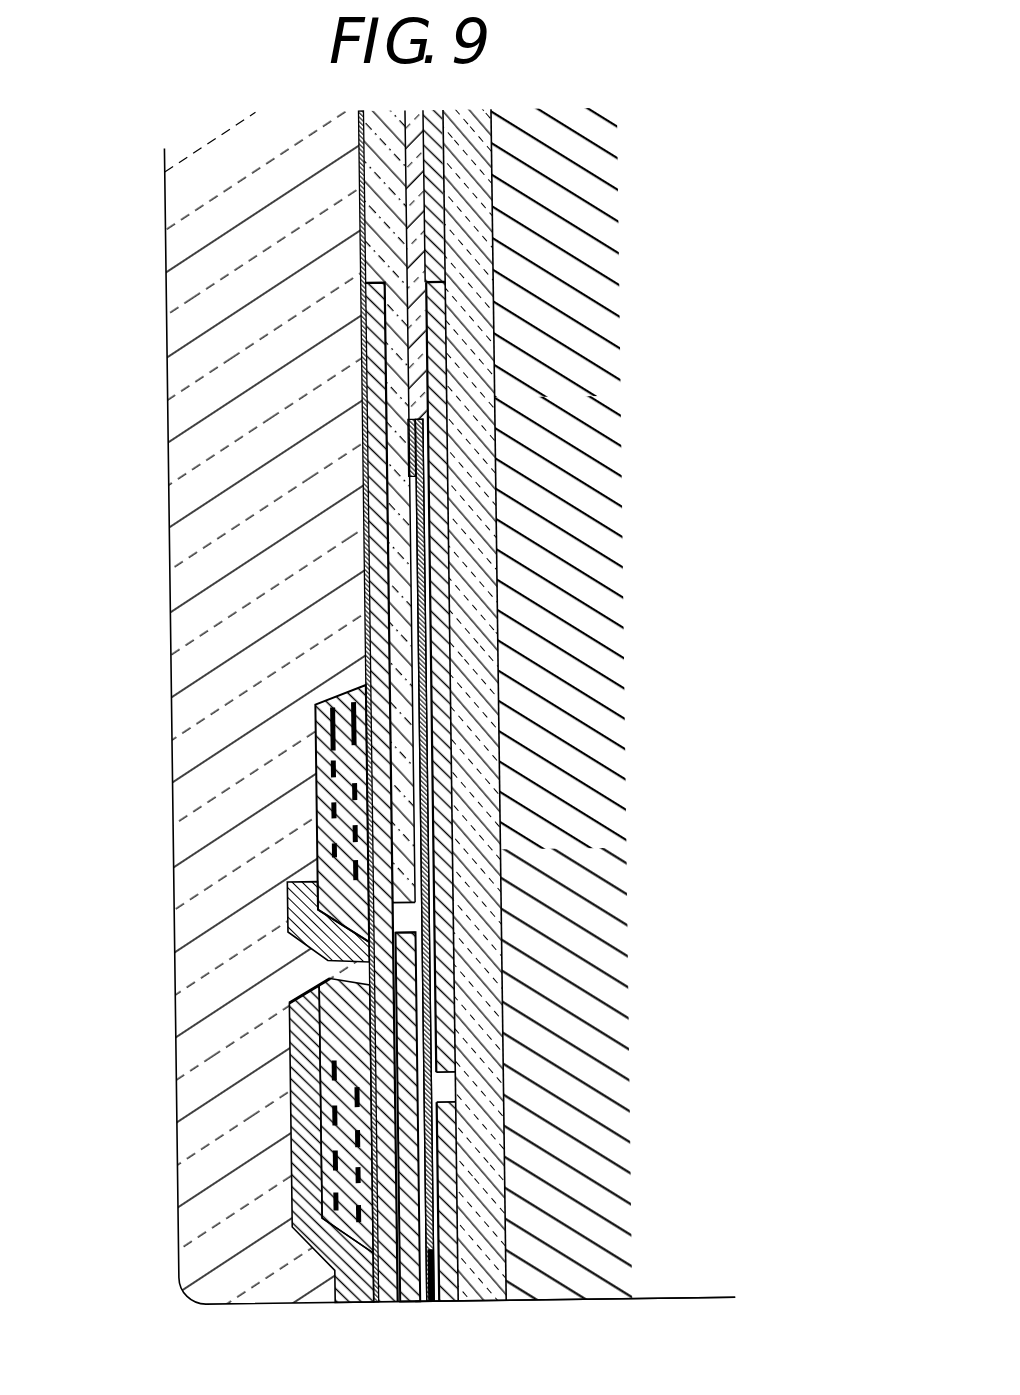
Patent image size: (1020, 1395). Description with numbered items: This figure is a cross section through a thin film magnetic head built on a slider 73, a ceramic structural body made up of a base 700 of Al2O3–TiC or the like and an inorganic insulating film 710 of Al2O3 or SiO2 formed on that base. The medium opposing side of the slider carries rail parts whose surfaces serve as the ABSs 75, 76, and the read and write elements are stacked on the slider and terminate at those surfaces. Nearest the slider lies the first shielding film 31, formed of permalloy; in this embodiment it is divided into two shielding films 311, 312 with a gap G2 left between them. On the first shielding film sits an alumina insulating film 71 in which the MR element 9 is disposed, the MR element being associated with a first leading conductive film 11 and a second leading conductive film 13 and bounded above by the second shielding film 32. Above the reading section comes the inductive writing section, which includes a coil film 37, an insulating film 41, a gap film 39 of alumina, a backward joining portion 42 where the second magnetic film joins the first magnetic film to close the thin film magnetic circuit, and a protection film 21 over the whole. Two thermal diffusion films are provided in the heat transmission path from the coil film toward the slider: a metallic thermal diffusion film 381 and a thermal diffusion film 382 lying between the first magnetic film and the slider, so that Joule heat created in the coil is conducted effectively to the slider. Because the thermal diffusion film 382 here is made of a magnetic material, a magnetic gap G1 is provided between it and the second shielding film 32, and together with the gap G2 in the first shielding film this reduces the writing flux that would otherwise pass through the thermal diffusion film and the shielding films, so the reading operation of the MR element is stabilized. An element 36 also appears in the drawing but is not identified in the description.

The protection film 21 is at (189, 610).
The base 700 is at (567, 195).
The inorganic insulating film 710 is at (458, 244).
The insulating film 71 is at (417, 351).
The slider 73 is at (627, 504).
The first leading conductive film 11 is at (416, 573).
The second leading conductive film 13 is at (574, 858).
The thermal diffusion film 381 is at (310, 724).
The coil film 37 is at (309, 772).
The insulating film 41 is at (308, 852).
The thermal diffusion film 382 is at (392, 776).
The backward joining portion 42 is at (329, 963).
The gap film 39 is at (275, 1019).
The magnetic gap G1 is at (395, 916).
The second shielding film 32 is at (392, 992).
The shielding film 311 is at (428, 1044).
The shielding film 312 is at (429, 1195).
The first shielding film 31 is at (594, 703).
The gap G2 is at (428, 1089).
The piezoelectric substrate 36 is at (283, 1217).
The MR element 9 is at (418, 1303).
The ABS 75 is at (570, 1303).
The ABS 76 is at (575, 1299).